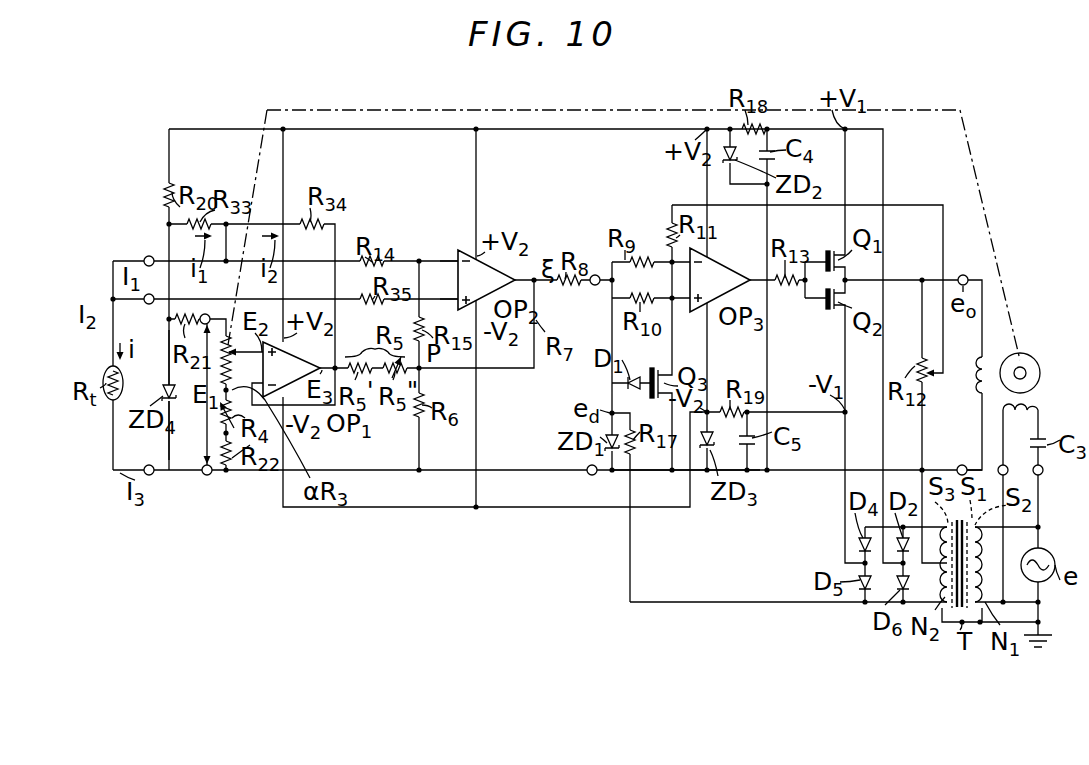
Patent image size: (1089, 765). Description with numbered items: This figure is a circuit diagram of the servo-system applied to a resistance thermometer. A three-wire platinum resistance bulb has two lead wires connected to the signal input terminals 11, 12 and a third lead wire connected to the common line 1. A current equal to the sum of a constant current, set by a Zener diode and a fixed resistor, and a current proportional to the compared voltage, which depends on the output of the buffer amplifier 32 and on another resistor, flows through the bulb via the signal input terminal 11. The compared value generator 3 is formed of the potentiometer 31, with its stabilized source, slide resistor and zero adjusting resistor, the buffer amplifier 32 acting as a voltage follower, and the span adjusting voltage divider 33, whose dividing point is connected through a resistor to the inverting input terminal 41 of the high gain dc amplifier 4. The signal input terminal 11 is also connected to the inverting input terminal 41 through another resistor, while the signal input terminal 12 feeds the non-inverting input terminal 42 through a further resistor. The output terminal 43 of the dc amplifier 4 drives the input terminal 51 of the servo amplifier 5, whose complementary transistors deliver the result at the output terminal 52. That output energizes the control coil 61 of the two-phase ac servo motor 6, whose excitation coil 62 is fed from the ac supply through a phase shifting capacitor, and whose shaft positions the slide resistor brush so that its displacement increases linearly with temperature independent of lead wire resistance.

The common line 1 is at (784, 472).
The compared value generator 3 is at (240, 482).
The dc amplifier 4 is at (520, 240).
The servo amplifier 5 is at (650, 220).
The ac 2-phase servo motor 6 is at (1037, 366).
The signal input terminal 11 is at (148, 256).
The signal input terminal 12 is at (149, 305).
The potentiometer 31 is at (172, 360).
The buffer amplifier 32 is at (290, 362).
The span adjusting voltage divider 33 is at (375, 374).
The inverting input terminal 41 is at (456, 261).
The non-inverting input terminal 42 is at (456, 299).
The output terminal 43 is at (534, 278).
The input terminal 51 is at (596, 286).
The output terminal 52 is at (964, 274).
The control coil 61 is at (976, 368).
The excitation coil 62 is at (1035, 405).